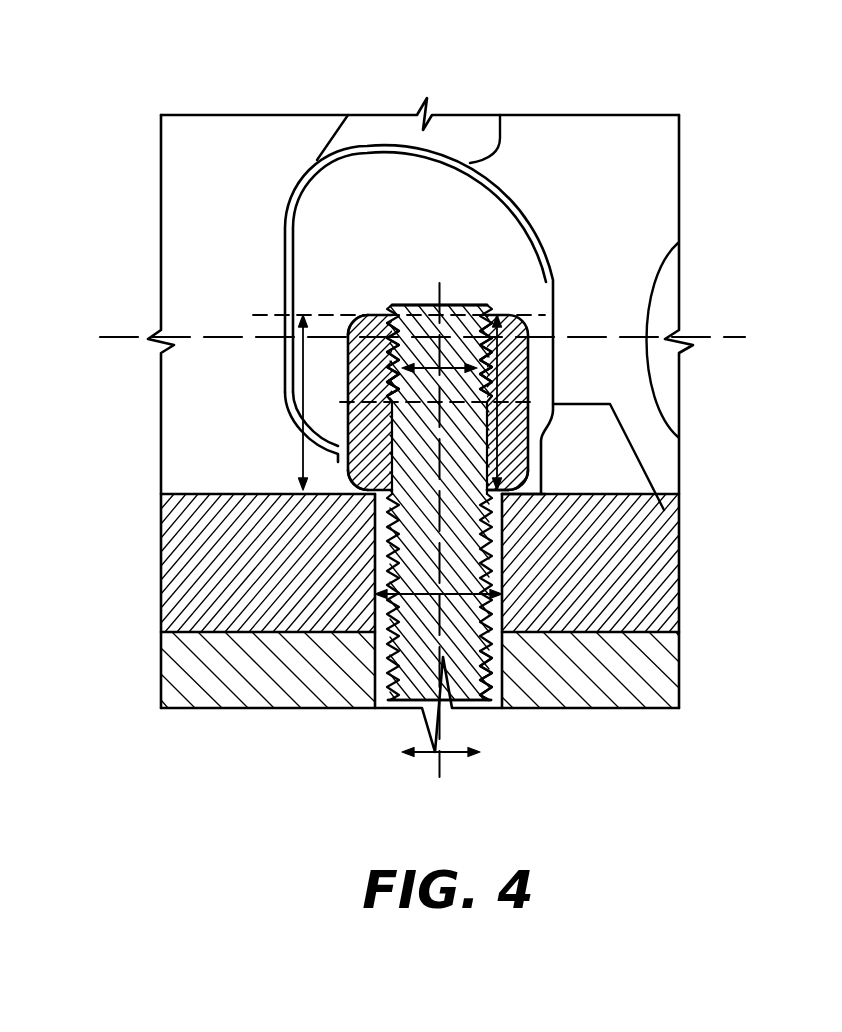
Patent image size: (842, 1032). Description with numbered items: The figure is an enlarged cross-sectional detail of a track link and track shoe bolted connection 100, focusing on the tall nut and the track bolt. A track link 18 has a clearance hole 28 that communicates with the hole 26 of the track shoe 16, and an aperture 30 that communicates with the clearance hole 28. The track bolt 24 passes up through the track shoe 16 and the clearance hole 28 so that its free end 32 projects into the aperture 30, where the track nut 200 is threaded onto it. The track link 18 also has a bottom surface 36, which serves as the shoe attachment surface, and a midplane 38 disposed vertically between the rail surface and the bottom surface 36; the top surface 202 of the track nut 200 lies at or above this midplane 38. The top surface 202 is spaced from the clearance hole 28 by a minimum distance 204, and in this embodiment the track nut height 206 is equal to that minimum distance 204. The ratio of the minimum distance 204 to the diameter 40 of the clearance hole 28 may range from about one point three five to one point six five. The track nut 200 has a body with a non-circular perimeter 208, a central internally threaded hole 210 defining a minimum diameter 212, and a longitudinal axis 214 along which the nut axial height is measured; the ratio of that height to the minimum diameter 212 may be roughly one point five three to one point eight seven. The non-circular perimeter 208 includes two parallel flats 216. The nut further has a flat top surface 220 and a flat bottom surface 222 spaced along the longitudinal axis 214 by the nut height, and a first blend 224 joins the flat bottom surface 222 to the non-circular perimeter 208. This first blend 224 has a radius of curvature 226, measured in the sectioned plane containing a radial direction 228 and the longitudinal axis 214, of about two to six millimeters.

The track shoe 16 is at (653, 676).
The track link 18 is at (658, 200).
The track bolt 24 is at (475, 705).
The hole 26 is at (494, 683).
The clearance hole 28 is at (503, 548).
The aperture 30 is at (482, 207).
The free end 32 is at (415, 305).
The bottom surface 36 is at (679, 633).
The midplane 38 is at (745, 338).
The diameter of the clearance hole 40 is at (420, 622).
The track link and track shoe bolted connection 100 is at (685, 714).
The track nut 200 is at (528, 320).
The top surface 202 is at (373, 313).
The minimum distance 204 is at (300, 452).
The track nut height 206 is at (495, 372).
The non-circular perimeter 208 is at (531, 357).
The central internally threaded hole 210 is at (395, 357).
The minimum diameter 212 is at (400, 388).
The longitudinal axis 214 is at (441, 293).
The parallel flats 216 is at (343, 462).
The flat top surface 220 is at (497, 315).
The flat bottom surface 222 is at (376, 494).
The first blend 224 is at (528, 494).
The radius of curvature 226 is at (513, 482).
The radial direction 228 is at (420, 755).